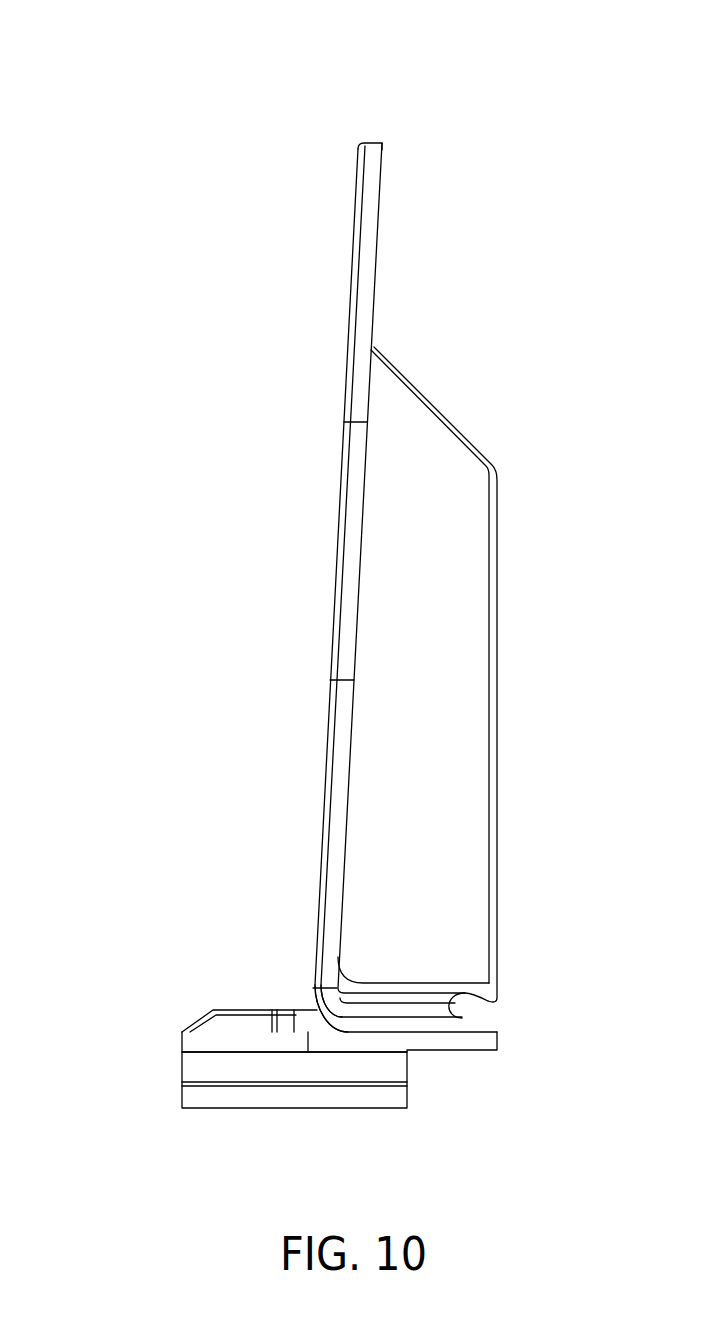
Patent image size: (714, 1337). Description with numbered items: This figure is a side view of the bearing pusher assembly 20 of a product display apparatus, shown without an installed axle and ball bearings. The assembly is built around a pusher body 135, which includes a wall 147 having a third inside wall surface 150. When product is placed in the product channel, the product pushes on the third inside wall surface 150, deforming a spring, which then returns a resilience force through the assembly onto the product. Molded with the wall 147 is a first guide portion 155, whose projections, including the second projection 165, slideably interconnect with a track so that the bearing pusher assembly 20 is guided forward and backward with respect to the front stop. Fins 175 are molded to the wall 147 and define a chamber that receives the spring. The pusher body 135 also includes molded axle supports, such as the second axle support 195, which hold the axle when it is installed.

The bearing pusher assembly 20 is at (136, 979).
The third inside wall surface 150 is at (356, 174).
The wall 147 is at (373, 173).
The fins 175 is at (450, 458).
The pusher body 135 is at (308, 1013).
The second axle support 195 is at (467, 1013).
The first guide portion 155 is at (383, 1053).
The second projection 165 is at (227, 1072).